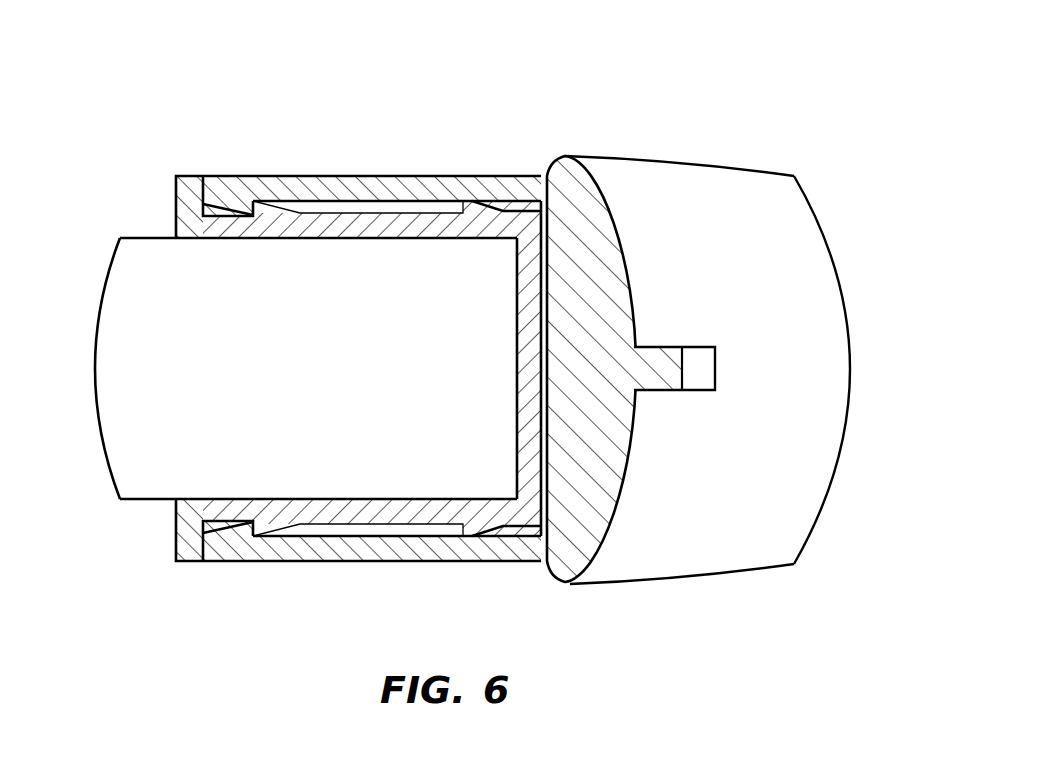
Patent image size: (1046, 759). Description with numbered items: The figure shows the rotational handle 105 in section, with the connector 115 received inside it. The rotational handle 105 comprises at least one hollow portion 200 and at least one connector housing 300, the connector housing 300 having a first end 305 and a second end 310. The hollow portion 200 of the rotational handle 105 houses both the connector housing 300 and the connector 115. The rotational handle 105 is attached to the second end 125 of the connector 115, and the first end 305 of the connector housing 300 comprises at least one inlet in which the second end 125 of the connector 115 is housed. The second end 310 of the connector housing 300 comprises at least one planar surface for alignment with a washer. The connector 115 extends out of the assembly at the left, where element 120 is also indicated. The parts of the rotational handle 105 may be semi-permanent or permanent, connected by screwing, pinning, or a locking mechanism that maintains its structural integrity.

The rotational handle 105 is at (116, 78).
The connector 115 is at (300, 285).
The shaft / plug 120 is at (128, 502).
The second end of the connector 125 is at (490, 480).
The hollow portion 200 is at (303, 562).
The connector housing 300 is at (388, 222).
The first end of the connector housing 305 is at (190, 176).
The second end of the connector housing 310 is at (538, 177).